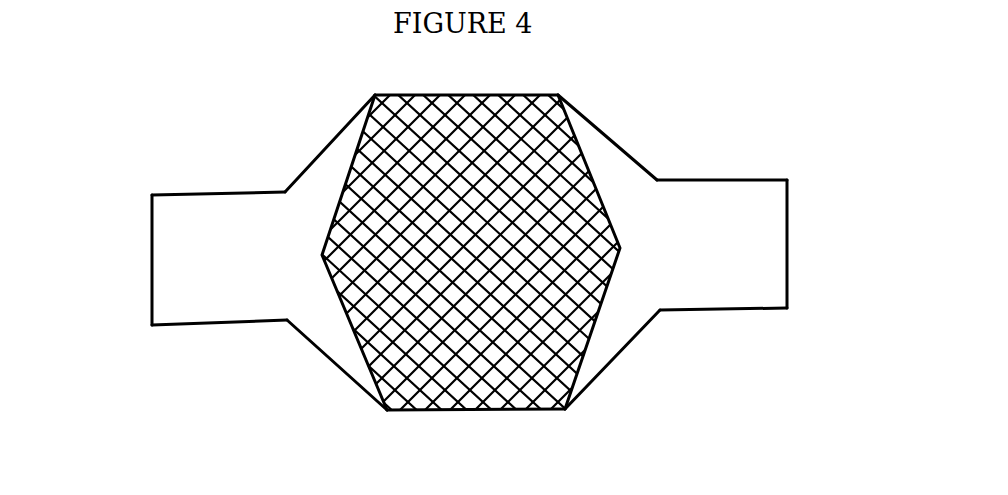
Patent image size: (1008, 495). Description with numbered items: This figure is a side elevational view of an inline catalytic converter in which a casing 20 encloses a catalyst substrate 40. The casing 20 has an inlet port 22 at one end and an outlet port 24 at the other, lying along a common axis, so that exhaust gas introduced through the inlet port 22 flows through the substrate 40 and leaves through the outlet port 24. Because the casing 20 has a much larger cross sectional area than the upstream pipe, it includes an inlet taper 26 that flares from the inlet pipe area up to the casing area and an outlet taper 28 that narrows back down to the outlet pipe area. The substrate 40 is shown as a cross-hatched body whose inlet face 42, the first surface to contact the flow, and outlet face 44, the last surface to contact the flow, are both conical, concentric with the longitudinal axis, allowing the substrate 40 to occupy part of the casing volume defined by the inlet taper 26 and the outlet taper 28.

The casing 20 is at (273, 188).
The inlet port 22 is at (148, 216).
The outlet port 24 is at (788, 234).
The inlet taper 26 is at (330, 140).
The outlet taper 28 is at (590, 120).
The catalyst substrate 40 is at (545, 390).
The inlet face 42 is at (360, 343).
The outlet face 44 is at (590, 342).